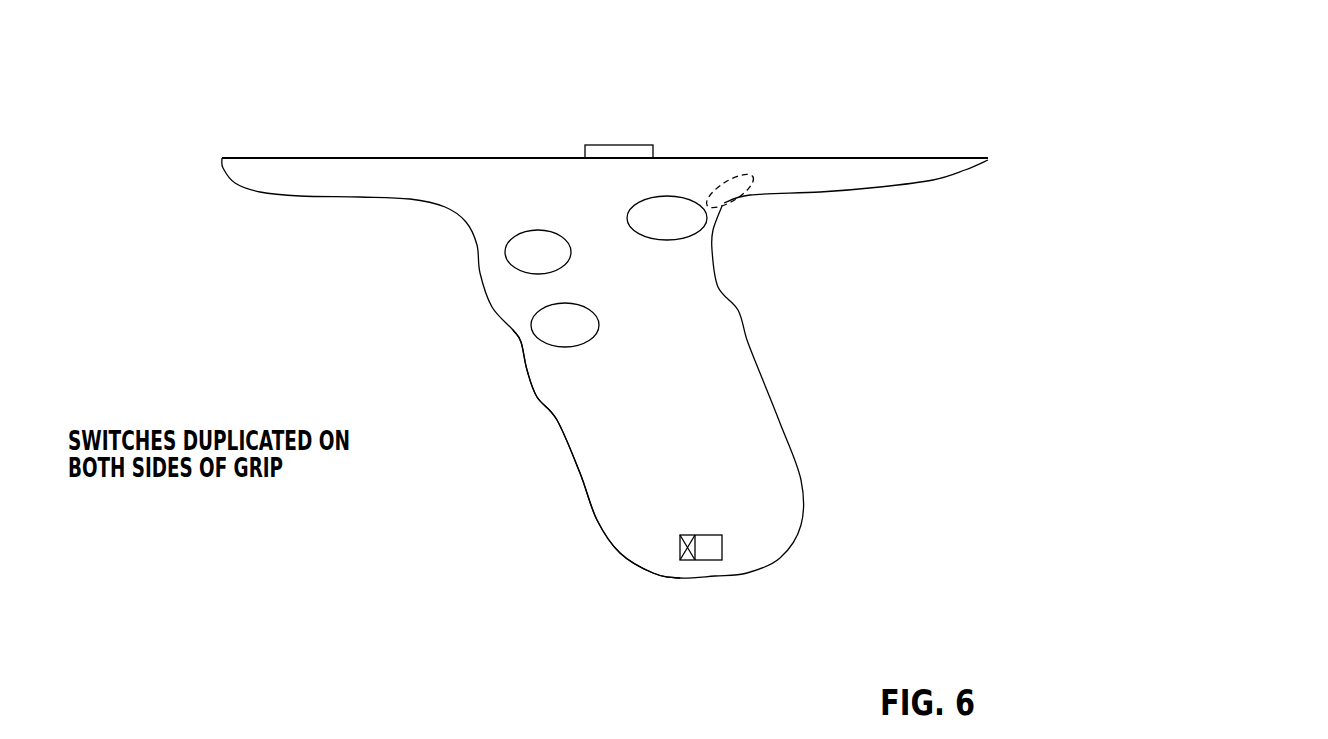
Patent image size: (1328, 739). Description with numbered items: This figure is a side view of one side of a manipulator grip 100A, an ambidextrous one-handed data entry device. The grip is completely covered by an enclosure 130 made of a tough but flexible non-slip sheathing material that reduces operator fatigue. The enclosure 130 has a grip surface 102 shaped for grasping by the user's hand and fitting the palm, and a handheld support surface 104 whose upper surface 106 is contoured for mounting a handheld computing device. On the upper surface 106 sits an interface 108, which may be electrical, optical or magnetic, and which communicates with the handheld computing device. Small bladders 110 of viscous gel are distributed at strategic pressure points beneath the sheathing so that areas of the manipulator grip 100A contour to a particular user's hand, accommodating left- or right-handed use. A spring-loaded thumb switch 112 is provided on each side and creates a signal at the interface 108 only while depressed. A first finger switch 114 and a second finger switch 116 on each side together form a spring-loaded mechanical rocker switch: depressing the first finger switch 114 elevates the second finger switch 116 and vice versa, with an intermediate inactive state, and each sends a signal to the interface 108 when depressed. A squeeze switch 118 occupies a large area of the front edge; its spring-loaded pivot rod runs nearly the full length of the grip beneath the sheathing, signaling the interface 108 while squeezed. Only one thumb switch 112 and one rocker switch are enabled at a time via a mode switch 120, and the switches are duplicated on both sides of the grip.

The manipulator grip 100A is at (706, 329).
The grip surface 102 is at (468, 255).
The handheld support surface 104 is at (813, 192).
The upper surface 106 is at (337, 158).
The interface 108 is at (685, 93).
The small bladders 110 is at (747, 175).
The thumb switch 112 is at (693, 240).
The first finger switch 114 is at (567, 268).
The second finger switch 116 is at (597, 337).
The squeeze switch 118 is at (533, 395).
The mode switch 120 is at (693, 560).
The enclosure 130 is at (441, 511).